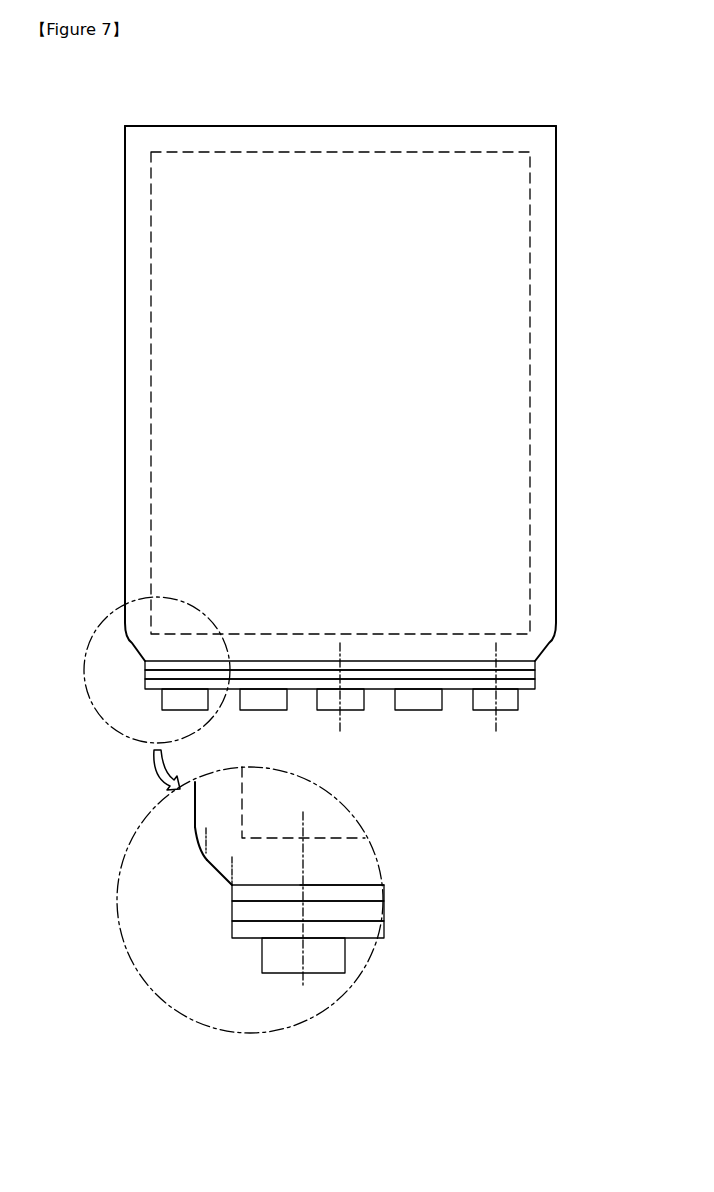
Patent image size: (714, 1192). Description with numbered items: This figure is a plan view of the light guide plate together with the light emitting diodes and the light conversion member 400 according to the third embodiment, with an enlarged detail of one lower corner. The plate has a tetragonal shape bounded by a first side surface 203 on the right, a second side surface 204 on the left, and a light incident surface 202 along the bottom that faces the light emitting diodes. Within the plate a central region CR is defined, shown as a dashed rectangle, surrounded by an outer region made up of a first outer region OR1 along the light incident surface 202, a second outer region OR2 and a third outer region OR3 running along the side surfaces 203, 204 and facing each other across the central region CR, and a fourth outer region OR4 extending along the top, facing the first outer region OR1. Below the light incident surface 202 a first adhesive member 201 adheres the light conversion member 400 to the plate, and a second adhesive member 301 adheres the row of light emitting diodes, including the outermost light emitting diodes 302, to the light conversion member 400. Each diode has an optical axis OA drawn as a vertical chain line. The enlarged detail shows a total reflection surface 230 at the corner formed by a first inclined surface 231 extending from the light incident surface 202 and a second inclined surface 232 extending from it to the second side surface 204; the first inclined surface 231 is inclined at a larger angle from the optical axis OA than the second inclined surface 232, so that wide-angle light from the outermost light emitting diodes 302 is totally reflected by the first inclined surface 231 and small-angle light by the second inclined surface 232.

The first adhesive member 201 is at (537, 662).
The light incident surface 202 is at (337, 883).
The first side surface 203 is at (556, 360).
The second side surface 204 is at (125, 361).
The total reflection surface 230 is at (127, 862).
The first inclined surface 231 is at (220, 872).
The second inclined surface 232 is at (200, 845).
The second adhesive member 301 is at (536, 687).
The outermost light emitting diodes 302 is at (512, 700).
The light conversion member 400 is at (536, 675).
The central region CR is at (531, 253).
The first outer region OR1 is at (420, 650).
The second outer region OR2 is at (550, 504).
The third outer region OR3 is at (132, 504).
The fourth outer region OR4 is at (345, 137).
The optical axis OA is at (418, 699).